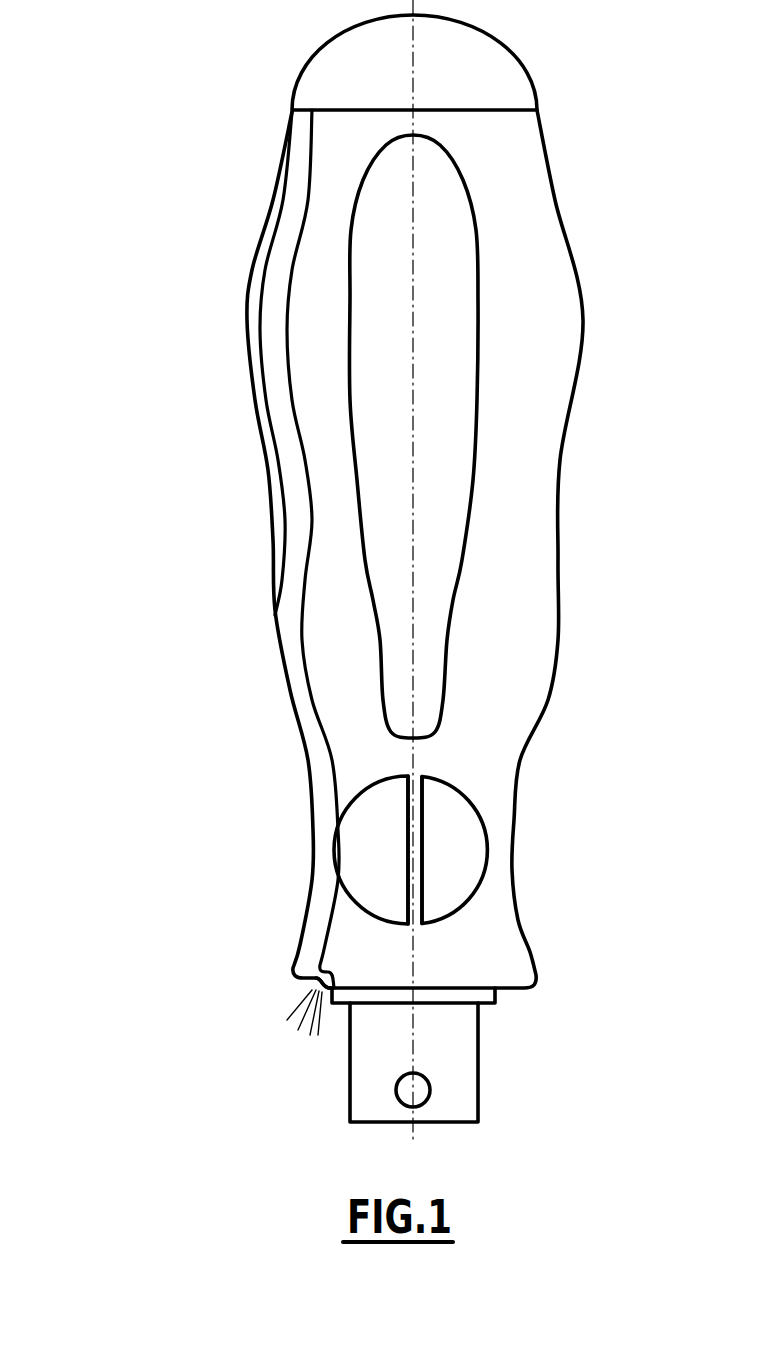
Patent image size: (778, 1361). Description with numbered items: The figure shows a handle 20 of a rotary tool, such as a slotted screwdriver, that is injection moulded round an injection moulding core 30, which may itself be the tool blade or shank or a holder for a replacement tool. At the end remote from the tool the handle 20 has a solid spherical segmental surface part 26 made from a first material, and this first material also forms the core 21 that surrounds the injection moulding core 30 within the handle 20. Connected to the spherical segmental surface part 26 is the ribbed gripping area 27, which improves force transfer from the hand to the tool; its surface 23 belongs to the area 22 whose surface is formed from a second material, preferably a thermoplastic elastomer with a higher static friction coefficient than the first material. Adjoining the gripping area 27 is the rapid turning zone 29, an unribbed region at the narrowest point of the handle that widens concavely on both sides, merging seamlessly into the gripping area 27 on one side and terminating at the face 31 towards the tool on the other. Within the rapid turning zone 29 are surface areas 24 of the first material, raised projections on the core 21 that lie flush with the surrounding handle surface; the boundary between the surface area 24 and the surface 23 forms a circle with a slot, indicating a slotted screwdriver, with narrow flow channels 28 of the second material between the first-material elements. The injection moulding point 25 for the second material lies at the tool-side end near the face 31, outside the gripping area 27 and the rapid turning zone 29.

The handle 20 is at (124, 15).
The core 21 is at (486, 998).
The area 22 is at (525, 703).
The surface of the gripping area 23 is at (586, 307).
The surface area 24 is at (456, 811).
The injection moulding point 25 is at (281, 989).
The spherical segmental surface part 26 is at (505, 50).
The gripping area 27 is at (212, 113).
The flow channels 28 is at (420, 877).
The rapid turning zone 29 is at (212, 781).
The injection moulding core 30 is at (350, 1080).
The face 31 is at (516, 990).